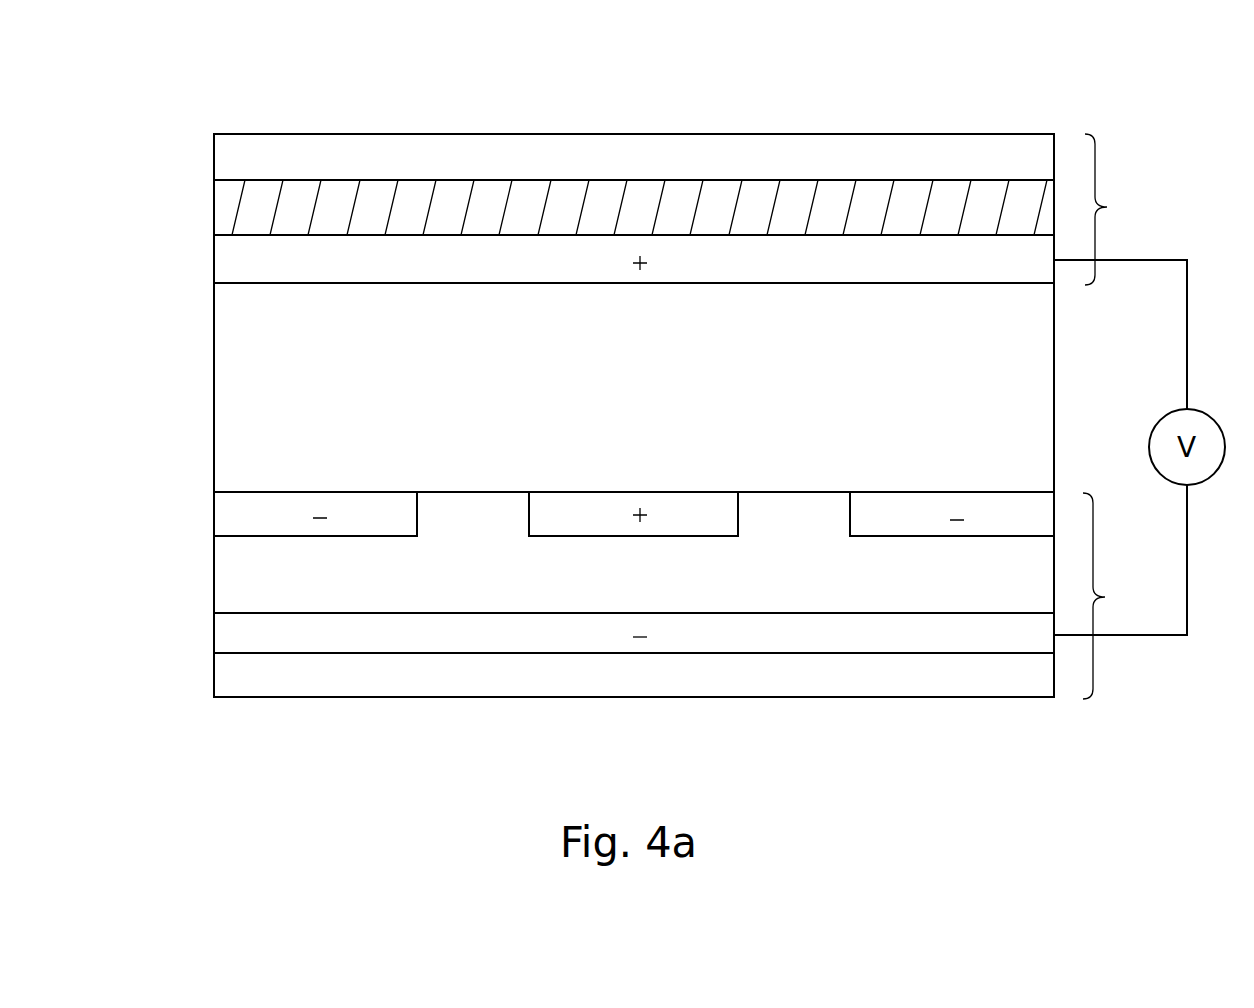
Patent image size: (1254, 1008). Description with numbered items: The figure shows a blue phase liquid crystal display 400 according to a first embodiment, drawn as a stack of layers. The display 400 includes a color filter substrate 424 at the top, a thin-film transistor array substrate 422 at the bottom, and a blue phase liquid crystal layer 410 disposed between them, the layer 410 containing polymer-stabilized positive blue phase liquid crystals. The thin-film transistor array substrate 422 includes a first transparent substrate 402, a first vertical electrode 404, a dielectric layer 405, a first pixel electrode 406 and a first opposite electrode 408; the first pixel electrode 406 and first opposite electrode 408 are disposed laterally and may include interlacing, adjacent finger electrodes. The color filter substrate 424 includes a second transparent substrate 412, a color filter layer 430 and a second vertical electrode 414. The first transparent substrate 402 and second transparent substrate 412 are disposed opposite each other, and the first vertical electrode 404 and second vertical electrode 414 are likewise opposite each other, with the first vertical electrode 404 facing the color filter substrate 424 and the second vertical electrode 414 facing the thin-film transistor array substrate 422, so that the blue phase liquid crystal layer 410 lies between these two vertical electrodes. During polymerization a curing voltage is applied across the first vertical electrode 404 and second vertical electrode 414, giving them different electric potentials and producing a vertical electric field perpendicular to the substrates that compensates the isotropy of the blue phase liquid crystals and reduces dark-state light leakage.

The display 400 is at (932, 116).
The first transparent substrate 402 is at (228, 675).
The first vertical electrode 404 is at (228, 635).
The dielectric layer 405 is at (228, 575).
The first pixel electrode 406 is at (228, 514).
The first opposite electrode 408 is at (707, 520).
The blue phase liquid crystal layer 410 is at (228, 382).
The second transparent substrate 412 is at (228, 157).
The second vertical electrode 414 is at (228, 262).
The thin-film transistor array substrate 422 is at (1116, 596).
The color filter substrate 424 is at (1117, 209).
The color filter layer 430 is at (228, 209).